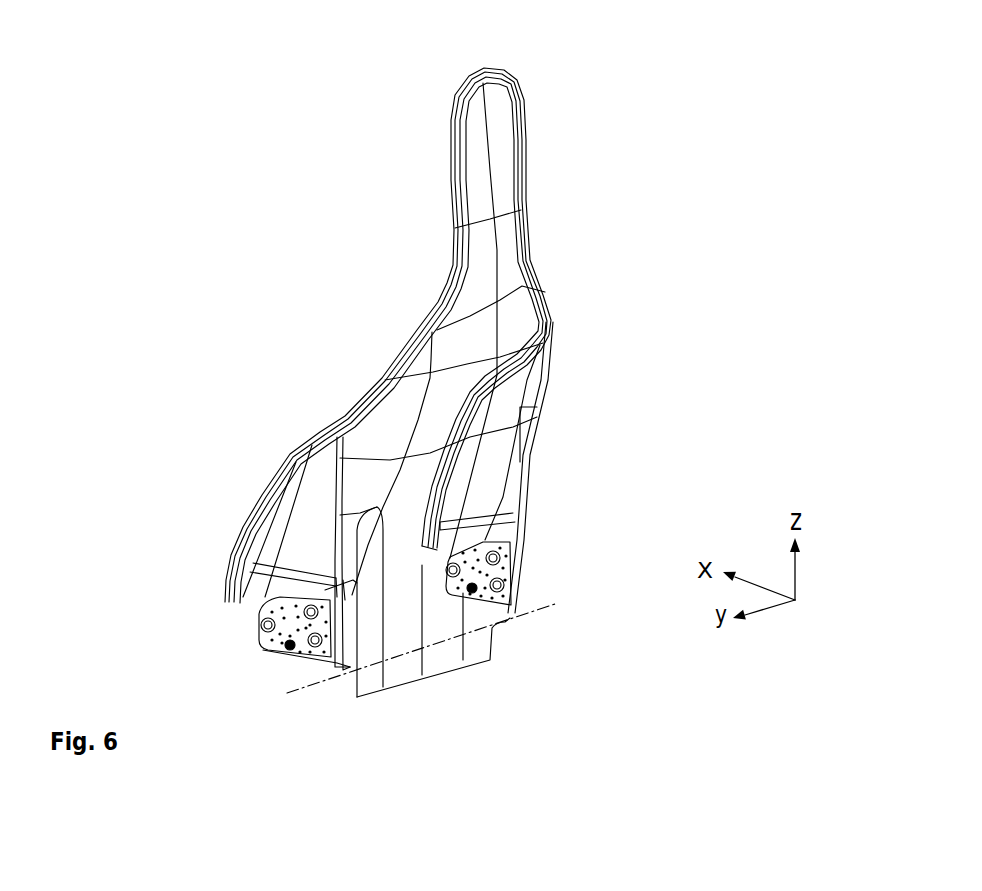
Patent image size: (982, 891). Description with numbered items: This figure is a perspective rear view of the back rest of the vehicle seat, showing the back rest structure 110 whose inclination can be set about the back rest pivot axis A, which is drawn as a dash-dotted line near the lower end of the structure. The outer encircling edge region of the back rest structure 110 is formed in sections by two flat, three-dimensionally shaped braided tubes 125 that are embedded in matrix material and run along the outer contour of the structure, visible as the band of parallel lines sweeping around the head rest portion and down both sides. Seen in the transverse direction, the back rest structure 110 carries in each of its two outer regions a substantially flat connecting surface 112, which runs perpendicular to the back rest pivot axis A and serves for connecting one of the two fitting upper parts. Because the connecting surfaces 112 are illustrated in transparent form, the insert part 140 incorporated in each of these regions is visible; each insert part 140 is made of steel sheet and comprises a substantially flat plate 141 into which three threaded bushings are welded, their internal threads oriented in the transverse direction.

The back rest structure 110 is at (514, 277).
The braided tube 125 is at (372, 400).
The connecting surface 112 is at (262, 608).
The insert part 140 is at (507, 574).
The plate 141 is at (500, 550).
The back rest pivot axis A is at (517, 620).